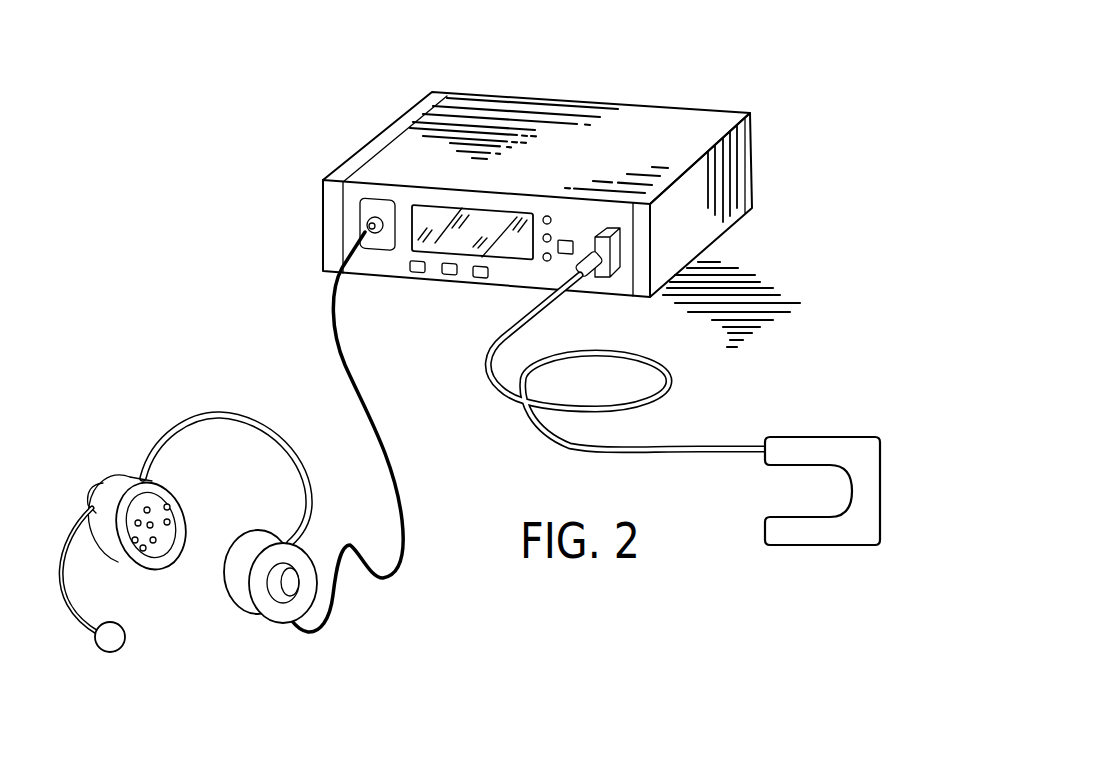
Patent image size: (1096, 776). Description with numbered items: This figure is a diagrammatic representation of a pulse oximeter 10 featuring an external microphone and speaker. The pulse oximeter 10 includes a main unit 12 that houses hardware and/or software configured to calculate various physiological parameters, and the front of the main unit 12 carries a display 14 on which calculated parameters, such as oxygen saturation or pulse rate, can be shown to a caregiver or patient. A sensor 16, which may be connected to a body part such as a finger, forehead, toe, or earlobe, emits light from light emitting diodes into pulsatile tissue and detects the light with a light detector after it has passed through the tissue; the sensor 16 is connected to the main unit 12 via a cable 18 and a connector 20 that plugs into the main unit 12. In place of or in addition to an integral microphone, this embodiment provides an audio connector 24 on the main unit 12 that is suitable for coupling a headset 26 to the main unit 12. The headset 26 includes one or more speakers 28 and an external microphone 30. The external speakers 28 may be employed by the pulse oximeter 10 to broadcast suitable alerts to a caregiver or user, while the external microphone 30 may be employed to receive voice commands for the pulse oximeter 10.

The pulse oximeter 10 is at (350, 100).
The main unit 12 is at (625, 104).
The display 14 is at (509, 262).
The sensor 16 is at (867, 446).
The cable 18 is at (525, 433).
The connector 20 is at (613, 253).
The audio connector 24 is at (365, 231).
The headset 26 is at (212, 412).
The speakers 28 is at (252, 612).
The external microphone 30 is at (123, 647).